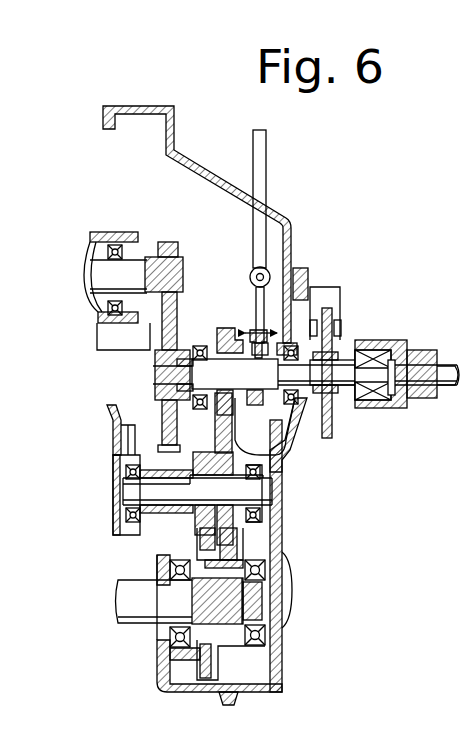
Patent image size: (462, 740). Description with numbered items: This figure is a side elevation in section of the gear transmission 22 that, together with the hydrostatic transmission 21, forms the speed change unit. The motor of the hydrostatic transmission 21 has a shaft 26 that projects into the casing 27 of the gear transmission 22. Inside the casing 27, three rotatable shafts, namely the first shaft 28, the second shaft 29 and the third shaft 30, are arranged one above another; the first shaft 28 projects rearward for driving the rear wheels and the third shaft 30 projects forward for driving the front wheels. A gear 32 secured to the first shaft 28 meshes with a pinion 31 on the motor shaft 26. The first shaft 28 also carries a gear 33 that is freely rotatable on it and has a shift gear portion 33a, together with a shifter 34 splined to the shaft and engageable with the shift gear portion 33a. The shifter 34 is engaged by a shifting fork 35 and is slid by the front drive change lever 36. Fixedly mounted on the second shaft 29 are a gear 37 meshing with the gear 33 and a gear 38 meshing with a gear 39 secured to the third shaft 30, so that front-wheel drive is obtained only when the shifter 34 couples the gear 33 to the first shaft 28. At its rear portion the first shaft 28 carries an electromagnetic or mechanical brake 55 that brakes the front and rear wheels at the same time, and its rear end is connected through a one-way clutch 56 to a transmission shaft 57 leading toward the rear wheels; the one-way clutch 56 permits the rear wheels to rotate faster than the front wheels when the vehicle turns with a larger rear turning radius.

The hydrostatic transmission 21 is at (107, 215).
The gear transmission 22 is at (311, 247).
The motor shaft 26 is at (130, 278).
The casing 27 is at (183, 163).
The first shaft 28 is at (342, 375).
The second shaft 29 is at (257, 490).
The third shaft 30 is at (147, 608).
The pinion 31 is at (165, 243).
The gear 32 is at (168, 318).
The gear 33 is at (212, 335).
The shift gear portion 33a is at (237, 330).
The shifter 34 is at (256, 402).
The shifting fork 35 is at (262, 305).
The front drive change lever 36 is at (262, 185).
The gear 37 is at (230, 444).
The gear 38 is at (197, 554).
The gear 39 is at (200, 552).
The brake 55 is at (343, 283).
The one-way clutch 56 is at (407, 340).
The transmission shaft 57 is at (450, 380).